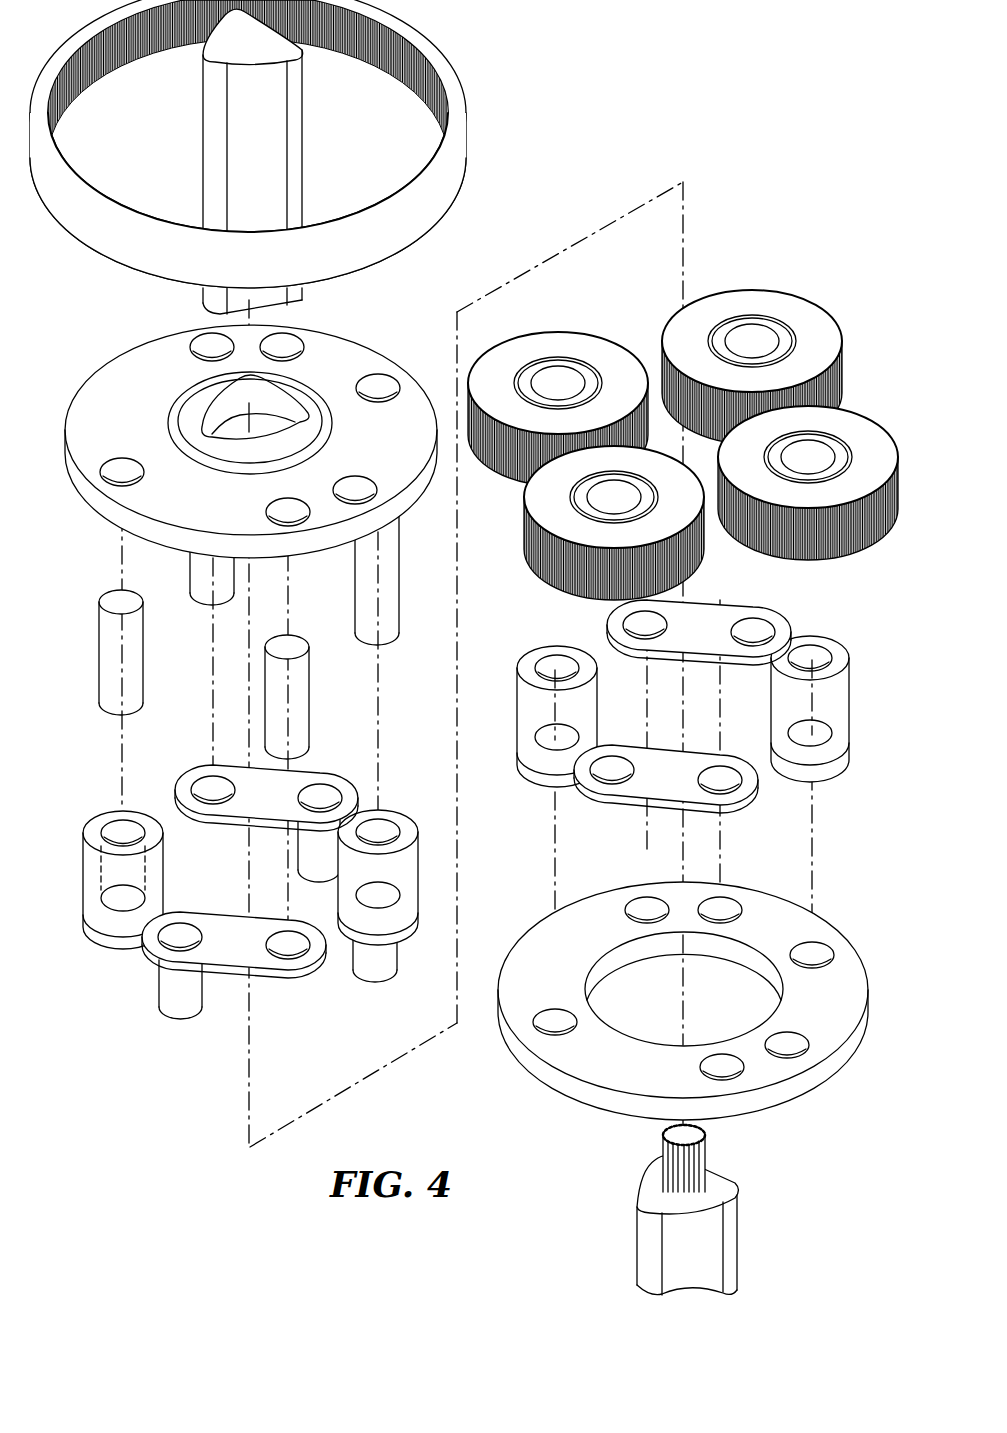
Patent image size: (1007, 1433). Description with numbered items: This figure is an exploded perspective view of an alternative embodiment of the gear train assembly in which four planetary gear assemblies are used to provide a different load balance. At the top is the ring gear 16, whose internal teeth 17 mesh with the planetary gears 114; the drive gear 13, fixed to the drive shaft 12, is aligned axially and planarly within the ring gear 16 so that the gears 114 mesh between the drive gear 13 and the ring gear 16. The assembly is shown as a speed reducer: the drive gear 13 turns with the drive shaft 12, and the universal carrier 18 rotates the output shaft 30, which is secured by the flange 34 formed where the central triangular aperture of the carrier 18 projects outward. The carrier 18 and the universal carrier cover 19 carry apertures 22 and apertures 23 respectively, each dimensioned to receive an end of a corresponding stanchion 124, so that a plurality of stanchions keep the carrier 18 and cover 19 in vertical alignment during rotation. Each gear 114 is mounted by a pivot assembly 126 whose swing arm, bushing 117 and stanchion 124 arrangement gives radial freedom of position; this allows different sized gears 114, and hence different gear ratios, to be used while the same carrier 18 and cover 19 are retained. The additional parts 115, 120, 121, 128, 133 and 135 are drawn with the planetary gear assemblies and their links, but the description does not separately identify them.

The drive shaft 12 is at (717, 1245).
The drive gear 13 is at (700, 1160).
The ring gear 16 is at (265, 157).
The teeth 17 is at (408, 72).
The universal carrier 18 is at (251, 430).
The universal carrier cover 19 is at (678, 984).
The apertures 22 is at (293, 342).
The apertures 23 is at (637, 903).
The output shaft 30 is at (270, 180).
The flange 34 is at (195, 392).
The gears 114 is at (683, 423).
The gear teeth 115 is at (838, 353).
The bushing 117 is at (572, 366).
The pins 120 is at (167, 998).
The bushings 121 is at (213, 787).
The stanchion 124 is at (198, 590).
The pivot assembly 126 is at (308, 768).
The links 128 is at (787, 702).
The bushings 133 is at (555, 670).
The link holes 135 is at (643, 623).